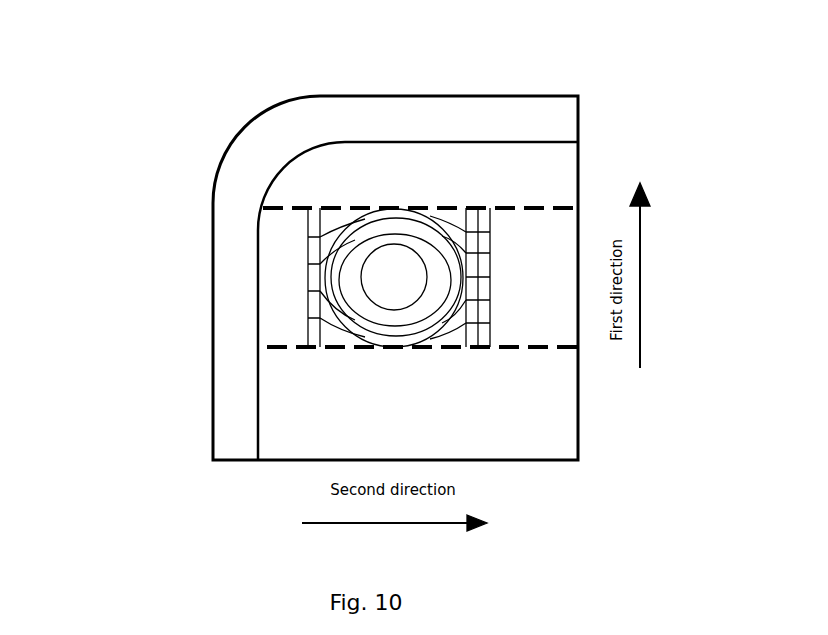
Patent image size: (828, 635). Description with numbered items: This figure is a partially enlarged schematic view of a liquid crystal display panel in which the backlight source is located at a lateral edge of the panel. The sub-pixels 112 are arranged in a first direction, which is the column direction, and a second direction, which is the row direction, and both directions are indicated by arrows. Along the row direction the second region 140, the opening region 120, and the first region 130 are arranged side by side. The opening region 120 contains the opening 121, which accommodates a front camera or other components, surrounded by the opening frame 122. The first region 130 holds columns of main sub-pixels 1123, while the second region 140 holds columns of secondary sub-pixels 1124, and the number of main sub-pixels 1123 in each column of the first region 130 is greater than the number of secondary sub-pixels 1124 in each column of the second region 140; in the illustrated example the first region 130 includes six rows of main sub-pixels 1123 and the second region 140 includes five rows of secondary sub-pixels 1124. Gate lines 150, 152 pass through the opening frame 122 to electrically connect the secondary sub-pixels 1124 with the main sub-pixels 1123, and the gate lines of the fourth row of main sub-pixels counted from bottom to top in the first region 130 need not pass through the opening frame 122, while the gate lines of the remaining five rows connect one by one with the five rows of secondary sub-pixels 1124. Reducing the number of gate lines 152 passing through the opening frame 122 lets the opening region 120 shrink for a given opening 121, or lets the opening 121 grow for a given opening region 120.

The sub-pixel 112 is at (263, 334).
The main sub-pixel 1123 is at (472, 315).
The secondary sub-pixel 1124 is at (315, 262).
The opening region 120 is at (520, 179).
The opening 121 is at (407, 277).
The opening frame 122 is at (412, 223).
The first region 130 is at (507, 255).
The second region 140 is at (282, 267).
The coil 150 is at (291, 215).
The gate line 152 is at (347, 227).